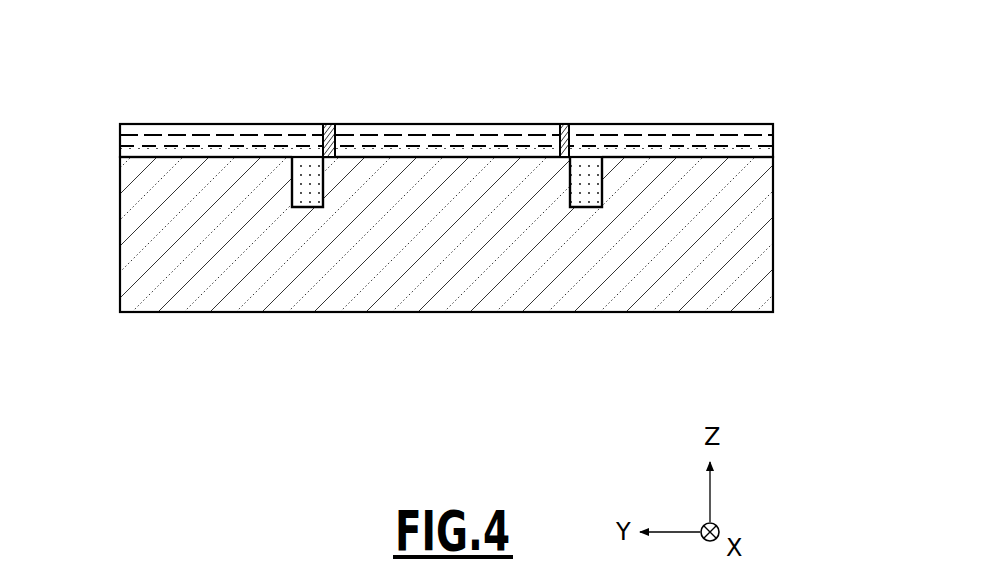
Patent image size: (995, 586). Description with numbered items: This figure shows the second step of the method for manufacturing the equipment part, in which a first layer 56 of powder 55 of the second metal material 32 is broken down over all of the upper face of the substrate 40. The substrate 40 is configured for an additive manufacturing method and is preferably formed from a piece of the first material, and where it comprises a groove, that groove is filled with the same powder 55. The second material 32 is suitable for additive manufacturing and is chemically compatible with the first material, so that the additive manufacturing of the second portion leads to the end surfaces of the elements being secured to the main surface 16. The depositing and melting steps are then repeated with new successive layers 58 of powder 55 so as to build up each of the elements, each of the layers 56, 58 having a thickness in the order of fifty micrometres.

The main surface 16 is at (447, 150).
The second metal material 32 is at (330, 124).
The substrate 40 is at (302, 332).
The powder 55 is at (578, 189).
The first layer 56 is at (770, 152).
The successive layers 58 is at (122, 141).